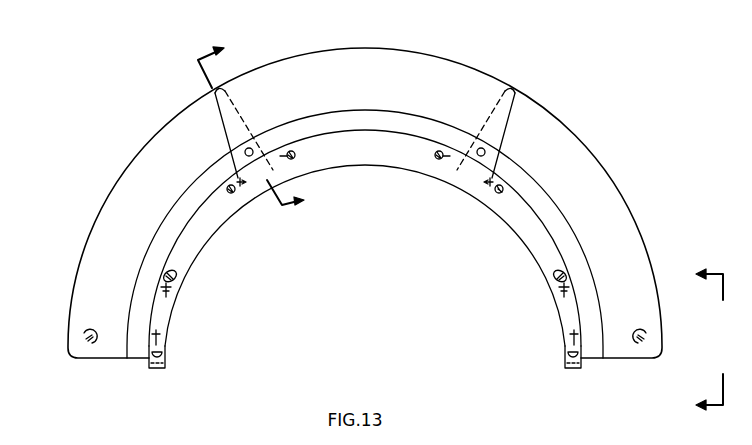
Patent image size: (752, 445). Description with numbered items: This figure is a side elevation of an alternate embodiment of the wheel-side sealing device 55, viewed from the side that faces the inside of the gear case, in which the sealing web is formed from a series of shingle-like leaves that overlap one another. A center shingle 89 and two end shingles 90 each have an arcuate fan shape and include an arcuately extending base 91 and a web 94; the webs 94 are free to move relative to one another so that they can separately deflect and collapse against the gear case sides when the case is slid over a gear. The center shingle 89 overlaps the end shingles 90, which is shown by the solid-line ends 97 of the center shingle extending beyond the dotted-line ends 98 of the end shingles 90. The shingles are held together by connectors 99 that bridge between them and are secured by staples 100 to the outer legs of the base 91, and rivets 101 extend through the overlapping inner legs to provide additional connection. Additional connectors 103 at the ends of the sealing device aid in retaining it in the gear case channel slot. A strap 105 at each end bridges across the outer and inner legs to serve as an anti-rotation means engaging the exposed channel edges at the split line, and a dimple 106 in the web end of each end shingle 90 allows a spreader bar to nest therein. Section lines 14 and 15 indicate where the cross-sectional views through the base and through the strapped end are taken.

The section line 14- 14 is at (261, 119).
The section line 15- 15 is at (697, 339).
The wheel-side sealing device 55 is at (499, 62).
The center shingle 89 is at (434, 53).
The end shingles 90 is at (105, 202).
The arcuately extending base 91 is at (365, 148).
The web 94 is at (393, 82).
The ends of center shingle 97 is at (230, 140).
The ends of end shingles 98 is at (241, 114).
The connectors 99 is at (251, 180).
The staples 100 is at (174, 290).
The rivets 101 is at (252, 148).
The additional connectors 103 is at (160, 311).
The strap 105 is at (158, 370).
The dimple 106 is at (89, 346).